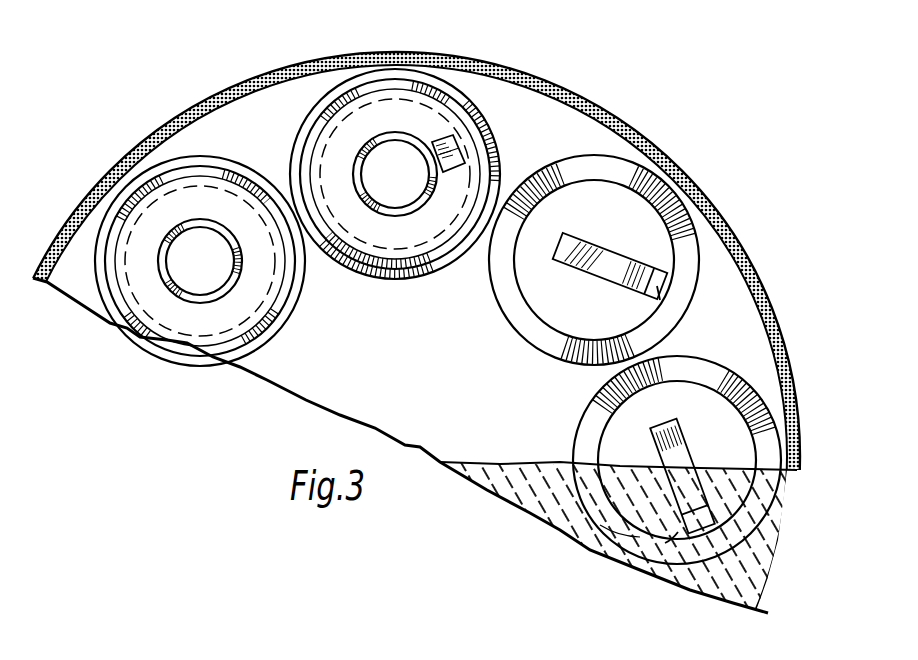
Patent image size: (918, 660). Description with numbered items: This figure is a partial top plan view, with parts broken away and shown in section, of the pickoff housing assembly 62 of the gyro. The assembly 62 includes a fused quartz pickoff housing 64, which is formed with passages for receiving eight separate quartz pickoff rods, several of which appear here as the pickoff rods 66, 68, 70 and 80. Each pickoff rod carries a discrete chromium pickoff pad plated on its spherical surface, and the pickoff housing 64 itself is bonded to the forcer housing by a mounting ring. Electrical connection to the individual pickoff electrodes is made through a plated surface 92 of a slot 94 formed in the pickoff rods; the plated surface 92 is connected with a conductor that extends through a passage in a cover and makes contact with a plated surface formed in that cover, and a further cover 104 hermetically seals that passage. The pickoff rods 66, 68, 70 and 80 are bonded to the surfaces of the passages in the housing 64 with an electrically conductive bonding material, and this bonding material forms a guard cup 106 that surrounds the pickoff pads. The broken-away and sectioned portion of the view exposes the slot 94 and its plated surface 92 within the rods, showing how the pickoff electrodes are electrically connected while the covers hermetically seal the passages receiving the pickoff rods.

The pickoff housing assembly 62 is at (72, 215).
The pickoff housing 64 is at (78, 273).
The pickoff rod 66 is at (430, 268).
The pickoff rod 68 is at (632, 207).
The pickoff rod 70 is at (733, 423).
The pickoff rod 80 is at (128, 175).
The plated surface 92 is at (615, 275).
The slot 94 is at (662, 302).
The cover 104 is at (195, 281).
The guard cup 106 is at (500, 267).